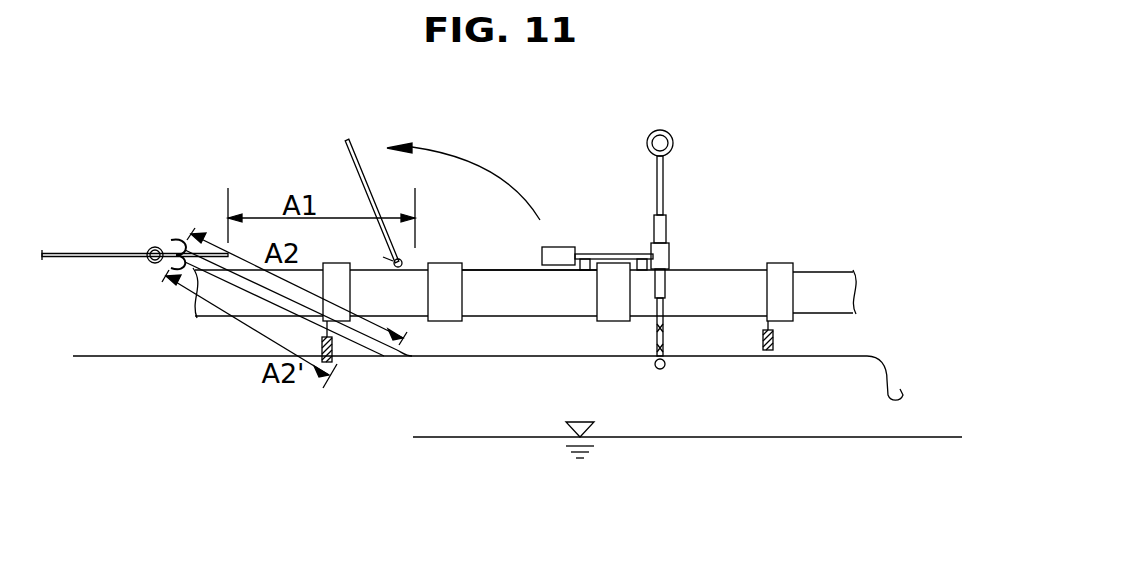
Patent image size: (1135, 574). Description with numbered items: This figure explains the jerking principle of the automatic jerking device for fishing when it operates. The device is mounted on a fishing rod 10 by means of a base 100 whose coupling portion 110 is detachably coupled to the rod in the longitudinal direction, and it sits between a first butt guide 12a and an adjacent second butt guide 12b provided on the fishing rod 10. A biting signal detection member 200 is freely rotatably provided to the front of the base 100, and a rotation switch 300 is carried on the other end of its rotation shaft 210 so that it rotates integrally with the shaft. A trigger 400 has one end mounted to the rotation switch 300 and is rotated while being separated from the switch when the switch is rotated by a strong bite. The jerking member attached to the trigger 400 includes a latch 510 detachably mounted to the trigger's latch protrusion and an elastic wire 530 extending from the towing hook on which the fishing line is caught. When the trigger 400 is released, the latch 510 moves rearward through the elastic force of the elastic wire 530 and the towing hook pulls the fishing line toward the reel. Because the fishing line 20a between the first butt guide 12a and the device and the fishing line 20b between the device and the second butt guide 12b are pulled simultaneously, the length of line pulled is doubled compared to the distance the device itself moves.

The fishing rod 10 is at (820, 283).
The fishing line between first butt guide and automatic jerking device 20a is at (268, 302).
The fishing line between automatic jerking device and second butt guide 20b is at (373, 343).
The first butt guide 12a is at (332, 340).
The second butt guide 12b is at (768, 352).
The base 100 is at (517, 268).
The coupling portion 110 is at (448, 312).
The biting signal detection member 200 is at (677, 249).
The rotation shaft 210 is at (612, 253).
The rotation switch 300 is at (562, 247).
The trigger 400 is at (352, 157).
The latch 510 is at (178, 240).
The elastic wire 530 is at (75, 252).